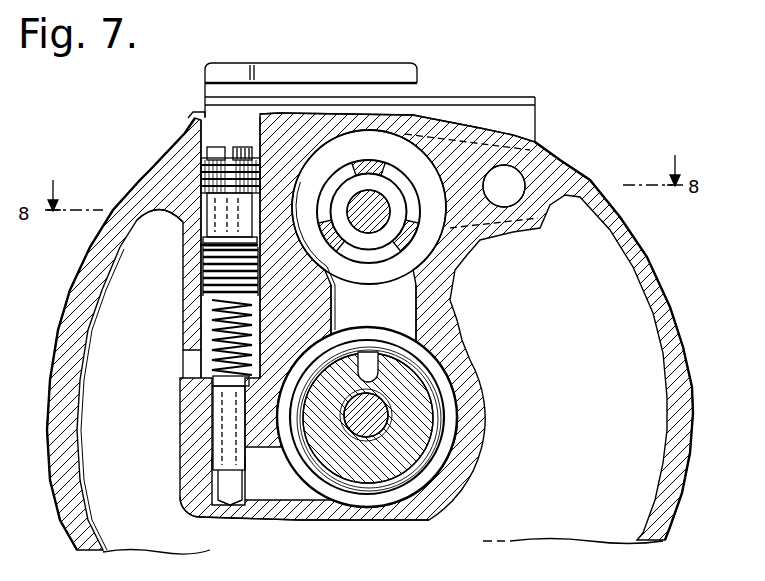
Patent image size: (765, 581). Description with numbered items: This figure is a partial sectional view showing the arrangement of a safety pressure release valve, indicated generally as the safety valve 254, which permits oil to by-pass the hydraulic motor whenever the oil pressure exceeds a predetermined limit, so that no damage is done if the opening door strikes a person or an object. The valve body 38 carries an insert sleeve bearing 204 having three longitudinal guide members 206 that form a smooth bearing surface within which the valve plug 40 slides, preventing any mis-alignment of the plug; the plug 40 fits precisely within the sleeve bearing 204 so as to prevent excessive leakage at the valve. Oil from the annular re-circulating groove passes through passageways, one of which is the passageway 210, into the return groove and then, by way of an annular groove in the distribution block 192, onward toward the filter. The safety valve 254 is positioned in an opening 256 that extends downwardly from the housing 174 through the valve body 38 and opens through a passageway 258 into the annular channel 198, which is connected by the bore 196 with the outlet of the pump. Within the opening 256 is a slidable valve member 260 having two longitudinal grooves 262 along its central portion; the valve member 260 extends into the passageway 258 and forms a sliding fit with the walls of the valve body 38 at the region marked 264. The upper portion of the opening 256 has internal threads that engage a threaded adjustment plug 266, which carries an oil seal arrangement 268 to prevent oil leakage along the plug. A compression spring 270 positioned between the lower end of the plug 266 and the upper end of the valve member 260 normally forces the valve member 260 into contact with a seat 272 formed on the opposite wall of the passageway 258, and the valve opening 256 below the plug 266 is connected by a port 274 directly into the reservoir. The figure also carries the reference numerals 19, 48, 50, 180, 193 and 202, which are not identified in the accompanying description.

The eccentric cam assembly 19 is at (405, 258).
The valve body 38 is at (452, 255).
The valve plug 40 is at (377, 217).
The housing bore 48 is at (340, 153).
The bearing ring 50 is at (387, 192).
The housing 174 is at (670, 317).
The follower shaft 180 is at (380, 417).
The distribution block 192 is at (402, 386).
The bearing 193 is at (460, 473).
The bore 196 is at (356, 392).
The annular channel 198 is at (448, 410).
The passage 202 is at (357, 305).
The insert sleeve bearing 204 is at (390, 172).
The longitudinal guide members 206 is at (368, 158).
The passageway 210 is at (513, 195).
The safety valve 254 is at (179, 324).
The opening 256 is at (200, 127).
The passageway 258 is at (293, 483).
The slidable valve member 260 is at (227, 392).
The longitudinal grooves 262 is at (248, 461).
The sliding fit 264 is at (210, 398).
The threaded adjustment plug 266 is at (165, 222).
The oil seal arrangement 268 is at (199, 178).
The compression spring 270 is at (250, 327).
The seat 272 is at (233, 505).
The port 274 is at (190, 367).